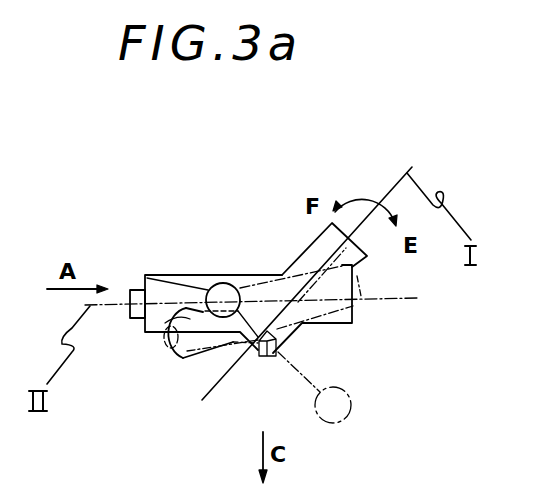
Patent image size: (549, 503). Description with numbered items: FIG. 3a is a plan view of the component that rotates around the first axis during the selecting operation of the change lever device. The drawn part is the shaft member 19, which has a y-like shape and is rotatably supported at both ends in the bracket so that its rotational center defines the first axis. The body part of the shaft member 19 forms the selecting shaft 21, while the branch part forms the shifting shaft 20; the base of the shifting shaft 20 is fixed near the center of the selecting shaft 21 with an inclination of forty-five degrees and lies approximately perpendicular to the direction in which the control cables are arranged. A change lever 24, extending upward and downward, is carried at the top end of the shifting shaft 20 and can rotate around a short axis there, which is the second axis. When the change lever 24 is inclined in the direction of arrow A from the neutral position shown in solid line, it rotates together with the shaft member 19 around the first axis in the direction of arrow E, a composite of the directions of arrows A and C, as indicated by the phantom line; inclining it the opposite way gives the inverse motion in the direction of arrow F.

The shaft member 19 is at (134, 135).
The shifting shaft 20 is at (249, 283).
The selecting shaft 21 is at (307, 257).
The change lever 24 is at (196, 352).